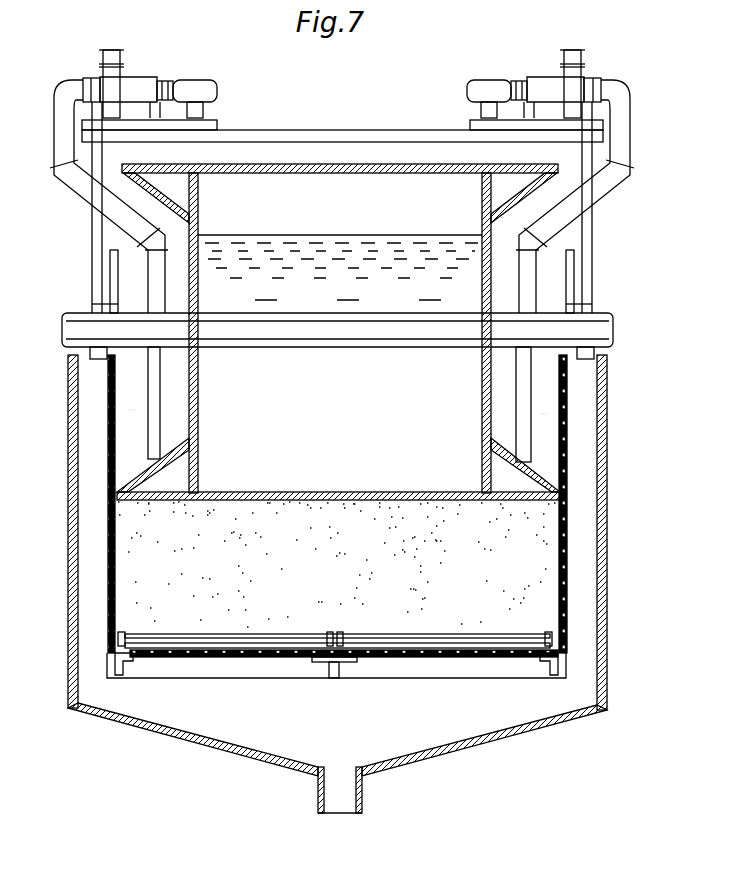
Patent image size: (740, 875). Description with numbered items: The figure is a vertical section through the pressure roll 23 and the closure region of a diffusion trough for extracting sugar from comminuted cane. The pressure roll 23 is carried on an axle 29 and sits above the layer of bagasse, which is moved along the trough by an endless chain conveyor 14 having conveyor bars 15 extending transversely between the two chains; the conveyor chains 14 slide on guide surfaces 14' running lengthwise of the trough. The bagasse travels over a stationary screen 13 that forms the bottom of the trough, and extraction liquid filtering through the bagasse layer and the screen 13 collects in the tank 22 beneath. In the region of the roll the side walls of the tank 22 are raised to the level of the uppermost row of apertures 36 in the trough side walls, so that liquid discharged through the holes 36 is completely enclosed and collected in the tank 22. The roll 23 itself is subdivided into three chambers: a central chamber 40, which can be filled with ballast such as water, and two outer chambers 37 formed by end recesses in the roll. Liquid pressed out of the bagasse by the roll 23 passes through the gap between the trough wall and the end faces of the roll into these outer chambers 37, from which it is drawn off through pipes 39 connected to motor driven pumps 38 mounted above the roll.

The stationary screen 13 is at (277, 658).
The endless chain conveyor 14 is at (333, 655).
The guide surfaces 14' is at (333, 667).
The conveyor bars 15 is at (185, 640).
The tank 22 is at (475, 742).
The pressure roll 23 is at (342, 166).
The axle 29 is at (362, 337).
The apertures 36 is at (105, 520).
The outer chambers 37 is at (128, 411).
The motor driven pumps 38 is at (132, 80).
The pipes 39 is at (153, 265).
The central chamber 40 is at (267, 180).